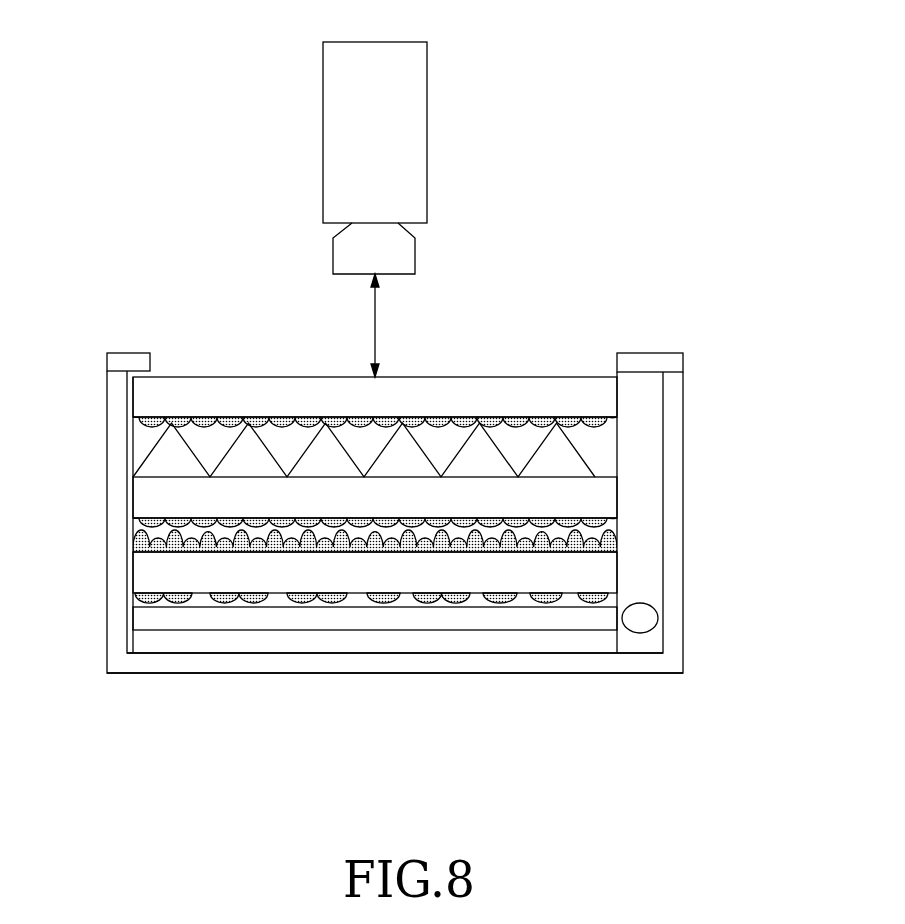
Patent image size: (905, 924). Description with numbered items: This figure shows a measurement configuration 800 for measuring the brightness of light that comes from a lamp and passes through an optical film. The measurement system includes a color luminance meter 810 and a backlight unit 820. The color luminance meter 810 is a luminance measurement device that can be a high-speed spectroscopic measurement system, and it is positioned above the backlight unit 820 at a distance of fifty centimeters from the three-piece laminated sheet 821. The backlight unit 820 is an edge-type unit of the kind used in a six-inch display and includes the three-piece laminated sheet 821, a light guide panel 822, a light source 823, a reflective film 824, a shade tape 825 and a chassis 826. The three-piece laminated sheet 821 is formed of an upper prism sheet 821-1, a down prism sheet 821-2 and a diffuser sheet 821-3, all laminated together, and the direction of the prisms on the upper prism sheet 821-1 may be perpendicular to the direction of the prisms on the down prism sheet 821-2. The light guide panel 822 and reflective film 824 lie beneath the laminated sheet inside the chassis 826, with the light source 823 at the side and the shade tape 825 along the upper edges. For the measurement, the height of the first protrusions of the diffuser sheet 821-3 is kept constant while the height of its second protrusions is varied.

The measurement configuration 800 is at (181, 34).
The SR3 color luminance meter 810 is at (410, 145).
The backlight unit 820 is at (775, 327).
The three-piece laminated sheet 821 is at (95, 600).
The upper prism sheet 821-1 is at (180, 393).
The down prism sheet 821-2 is at (260, 502).
The diffuser sheet 821-3 is at (205, 577).
The light guide panel 822 is at (297, 617).
The light source 823 is at (648, 620).
The reflective film 824 is at (532, 642).
The shade tape 825 is at (638, 360).
The chassis 826 is at (678, 410).